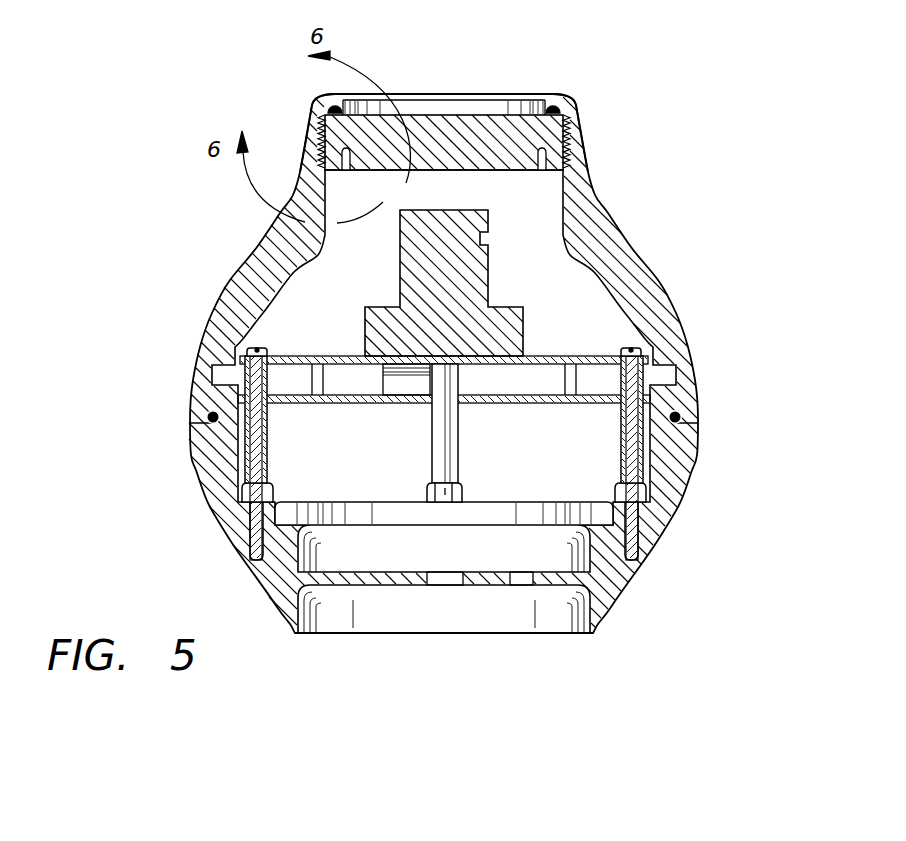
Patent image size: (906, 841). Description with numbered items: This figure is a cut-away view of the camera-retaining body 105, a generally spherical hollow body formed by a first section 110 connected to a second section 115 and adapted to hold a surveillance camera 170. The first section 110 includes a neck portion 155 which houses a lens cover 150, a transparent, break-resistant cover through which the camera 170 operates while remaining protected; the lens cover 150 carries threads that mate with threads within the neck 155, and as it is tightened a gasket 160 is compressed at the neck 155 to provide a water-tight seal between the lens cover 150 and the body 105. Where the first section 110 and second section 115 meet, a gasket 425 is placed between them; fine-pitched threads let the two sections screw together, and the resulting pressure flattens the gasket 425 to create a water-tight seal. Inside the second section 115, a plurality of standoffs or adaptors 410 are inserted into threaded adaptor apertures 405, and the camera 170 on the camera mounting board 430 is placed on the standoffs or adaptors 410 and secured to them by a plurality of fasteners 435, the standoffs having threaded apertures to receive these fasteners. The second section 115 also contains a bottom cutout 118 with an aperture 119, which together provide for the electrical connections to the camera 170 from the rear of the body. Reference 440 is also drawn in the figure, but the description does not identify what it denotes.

The camera-retaining body 105 is at (713, 176).
The first section 110 is at (640, 268).
The second section 115 is at (688, 510).
The bottom cutout 118 is at (542, 634).
The aperture 119 is at (447, 586).
The lens cover 150 is at (538, 133).
The neck portion 155 is at (587, 160).
The gasket 160 is at (330, 100).
The surveillance camera 170 is at (490, 284).
The adaptor apertures 405 is at (250, 530).
The standoffs or adaptors 410 is at (432, 441).
The gasket 425 is at (207, 413).
The camera mounting board 430 is at (537, 356).
The fasteners 435 is at (257, 349).
The sleeve 440 is at (245, 385).